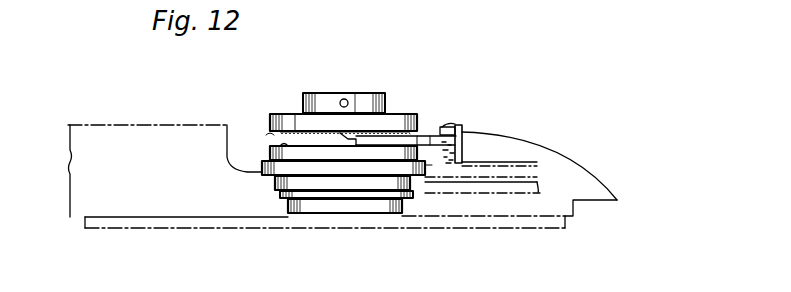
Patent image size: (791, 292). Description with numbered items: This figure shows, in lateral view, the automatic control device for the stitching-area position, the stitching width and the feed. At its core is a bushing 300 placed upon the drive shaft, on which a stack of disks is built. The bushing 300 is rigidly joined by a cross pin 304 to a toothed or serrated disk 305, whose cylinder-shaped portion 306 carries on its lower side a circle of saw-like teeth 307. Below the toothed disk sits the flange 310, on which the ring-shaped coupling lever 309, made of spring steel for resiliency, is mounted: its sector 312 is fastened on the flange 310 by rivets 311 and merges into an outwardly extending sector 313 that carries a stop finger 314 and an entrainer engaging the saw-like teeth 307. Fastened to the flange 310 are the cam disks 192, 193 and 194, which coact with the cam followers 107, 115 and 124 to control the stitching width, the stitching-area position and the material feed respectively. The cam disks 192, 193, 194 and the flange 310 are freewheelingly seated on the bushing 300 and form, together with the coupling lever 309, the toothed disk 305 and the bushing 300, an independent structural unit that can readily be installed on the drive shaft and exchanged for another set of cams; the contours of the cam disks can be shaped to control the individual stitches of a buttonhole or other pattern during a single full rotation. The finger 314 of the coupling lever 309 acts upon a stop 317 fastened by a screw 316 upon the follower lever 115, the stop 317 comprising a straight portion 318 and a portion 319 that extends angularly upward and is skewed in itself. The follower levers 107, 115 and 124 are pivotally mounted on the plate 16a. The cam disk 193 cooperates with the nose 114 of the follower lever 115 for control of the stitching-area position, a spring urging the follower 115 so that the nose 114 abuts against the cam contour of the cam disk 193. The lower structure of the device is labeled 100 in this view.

The plate 16a is at (167, 229).
The base frame 100 is at (337, 214).
The bushing 300 is at (312, 214).
The cam disk 194 is at (278, 193).
The cam disk 192 is at (273, 181).
The cam disk 193 is at (261, 166).
The flange 310 is at (264, 149).
The rivets 311 is at (270, 149).
The sector 312 is at (272, 148).
The saw-like teeth 307 is at (268, 145).
The cross pin 304 is at (344, 99).
The coupling lever 309 is at (351, 133).
The toothed disk 305 is at (373, 92).
The cylinder-shaped portion 306 is at (424, 133).
The outwardly extending sector 313 is at (430, 135).
The straight portion 318 is at (447, 127).
The stop finger 314 is at (450, 127).
The angular portion 319 is at (459, 125).
The stop 317 is at (463, 142).
The screw 316 is at (464, 152).
The follower lever 115 is at (538, 164).
The follower lever 107 is at (540, 182).
The follower lever 124 is at (538, 192).
The nose 114 is at (423, 167).